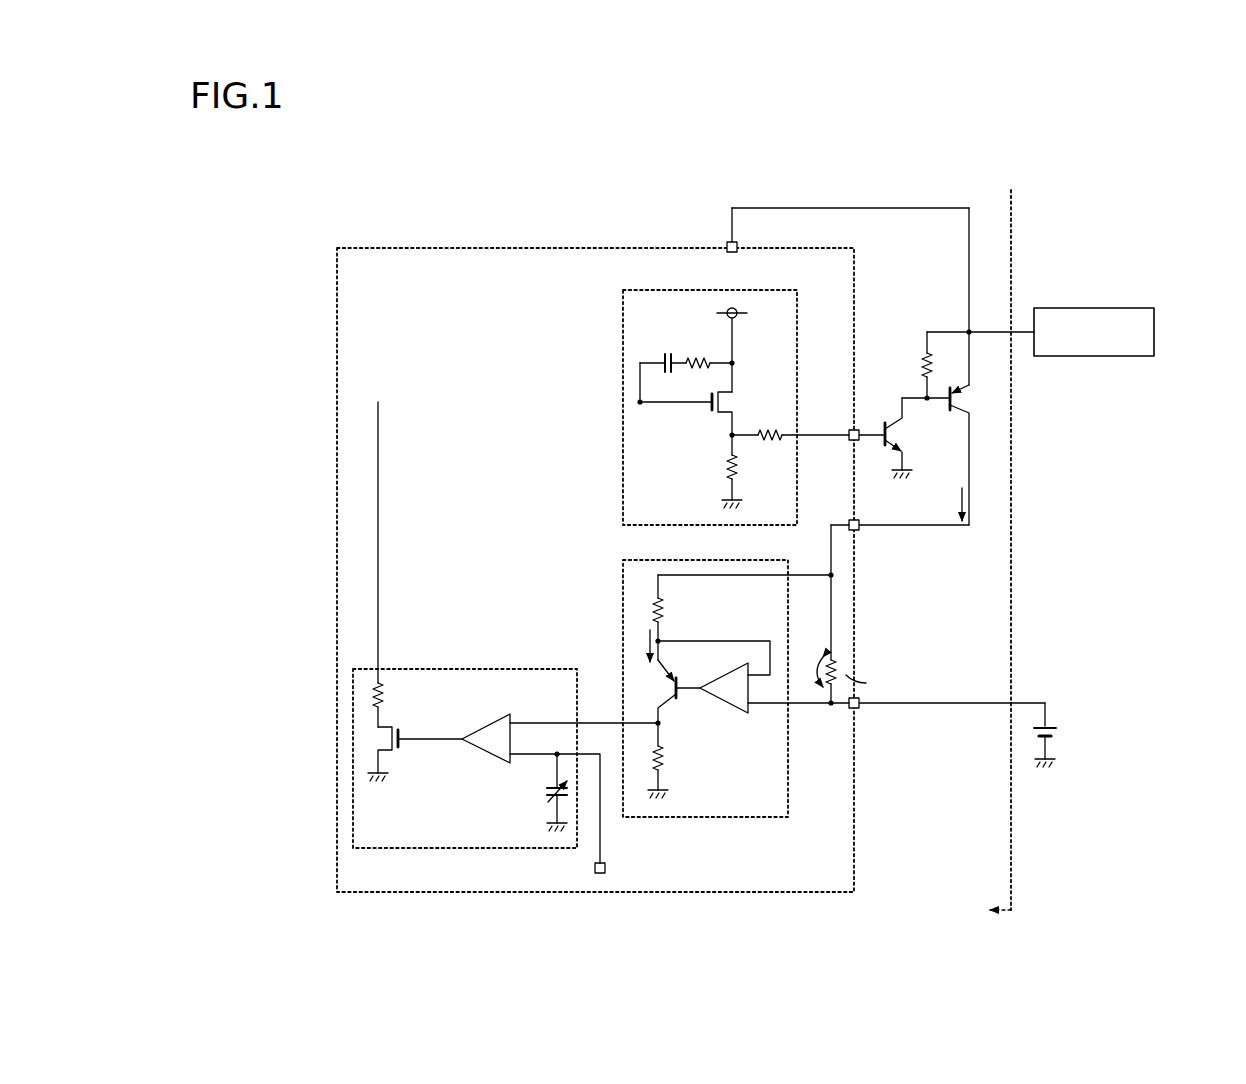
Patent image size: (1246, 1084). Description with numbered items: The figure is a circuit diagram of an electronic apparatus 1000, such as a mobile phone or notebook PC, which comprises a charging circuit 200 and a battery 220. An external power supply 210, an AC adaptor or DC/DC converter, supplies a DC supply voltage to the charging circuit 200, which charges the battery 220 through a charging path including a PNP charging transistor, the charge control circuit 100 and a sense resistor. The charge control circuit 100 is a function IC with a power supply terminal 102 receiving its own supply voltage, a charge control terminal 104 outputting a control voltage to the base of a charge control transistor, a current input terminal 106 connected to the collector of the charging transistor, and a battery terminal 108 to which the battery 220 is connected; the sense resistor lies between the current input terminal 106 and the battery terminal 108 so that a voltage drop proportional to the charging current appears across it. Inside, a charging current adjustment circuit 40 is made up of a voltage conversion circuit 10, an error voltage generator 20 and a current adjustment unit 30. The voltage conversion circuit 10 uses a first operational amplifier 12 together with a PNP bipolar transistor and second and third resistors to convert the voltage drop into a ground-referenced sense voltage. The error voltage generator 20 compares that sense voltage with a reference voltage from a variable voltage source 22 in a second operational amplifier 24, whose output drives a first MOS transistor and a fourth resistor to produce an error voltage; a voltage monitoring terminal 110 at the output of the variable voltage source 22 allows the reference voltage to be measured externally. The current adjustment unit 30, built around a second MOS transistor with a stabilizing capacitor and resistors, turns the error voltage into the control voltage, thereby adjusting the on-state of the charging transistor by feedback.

The electronic apparatus 1000 is at (1226, 200).
The charge control circuit 100 is at (426, 247).
The power supply terminal 102 is at (727, 243).
The charge control terminal 104 is at (849, 441).
The current input terminal 106 is at (858, 531).
The battery terminal 108 is at (858, 709).
The voltage monitoring terminal 110 is at (605, 869).
The charging circuit 200 is at (1011, 190).
The external power supply 210 is at (1075, 308).
The battery 220 is at (1055, 733).
The voltage conversion circuit 10 is at (703, 560).
The first operational amplifier 12 is at (723, 672).
The error voltage generator 20 is at (492, 669).
The variable voltage source 22 is at (547, 792).
The second operational amplifier 24 is at (481, 723).
The current adjustment unit 30 is at (623, 495).
The charging current adjustment circuit 40 is at (601, 576).